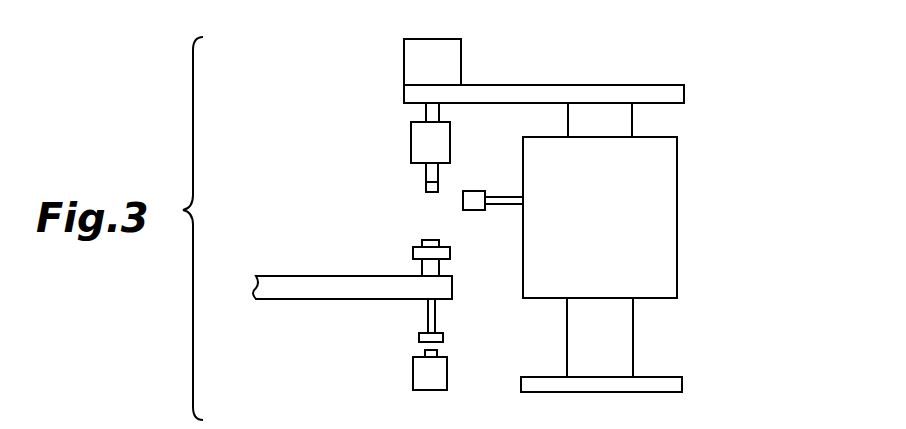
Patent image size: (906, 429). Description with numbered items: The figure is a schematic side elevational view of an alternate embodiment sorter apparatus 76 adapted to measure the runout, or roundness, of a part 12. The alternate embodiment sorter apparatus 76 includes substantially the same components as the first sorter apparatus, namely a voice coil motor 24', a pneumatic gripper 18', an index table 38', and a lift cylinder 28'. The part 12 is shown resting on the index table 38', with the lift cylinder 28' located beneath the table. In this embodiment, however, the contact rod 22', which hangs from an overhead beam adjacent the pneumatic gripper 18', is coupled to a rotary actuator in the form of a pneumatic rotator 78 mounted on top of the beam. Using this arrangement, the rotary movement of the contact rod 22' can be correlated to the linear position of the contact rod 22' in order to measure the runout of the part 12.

The alternate embodiment sorter apparatus 76 is at (726, 91).
The pneumatic rotator 78 is at (453, 53).
The contact rod 22' is at (377, 97).
The pneumatic gripper 18' is at (388, 157).
The voice coil motor 24' is at (652, 217).
The index table 38' is at (352, 255).
The part 12 is at (413, 253).
The lift cylinder 28' is at (372, 366).